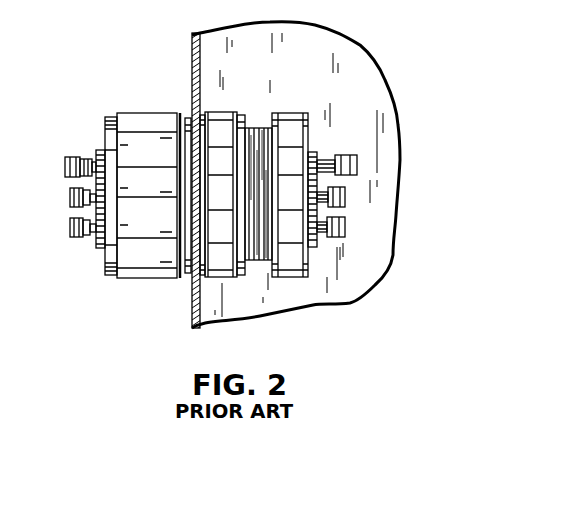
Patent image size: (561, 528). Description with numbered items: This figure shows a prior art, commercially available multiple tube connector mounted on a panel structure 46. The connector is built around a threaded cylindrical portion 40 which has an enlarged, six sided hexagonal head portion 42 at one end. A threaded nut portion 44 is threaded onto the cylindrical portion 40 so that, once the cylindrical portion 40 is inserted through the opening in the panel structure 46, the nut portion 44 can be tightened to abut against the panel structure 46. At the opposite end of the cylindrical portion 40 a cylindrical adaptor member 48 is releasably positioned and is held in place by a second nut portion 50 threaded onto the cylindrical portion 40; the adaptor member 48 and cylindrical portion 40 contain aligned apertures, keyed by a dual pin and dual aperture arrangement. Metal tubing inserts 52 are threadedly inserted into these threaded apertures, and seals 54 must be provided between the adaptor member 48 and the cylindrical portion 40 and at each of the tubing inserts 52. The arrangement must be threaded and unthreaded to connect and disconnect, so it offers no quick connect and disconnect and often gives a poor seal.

The threaded cylindrical portion 40 is at (257, 137).
The hexagonal head portion 42 is at (295, 120).
The threaded nut portion 44 is at (218, 115).
The panel structure 46 is at (193, 67).
The cylindrical adaptor member 48 is at (110, 116).
The second nut portion 50 is at (137, 120).
The metal tubing inserts 52 is at (84, 160).
The seals 54 is at (102, 246).